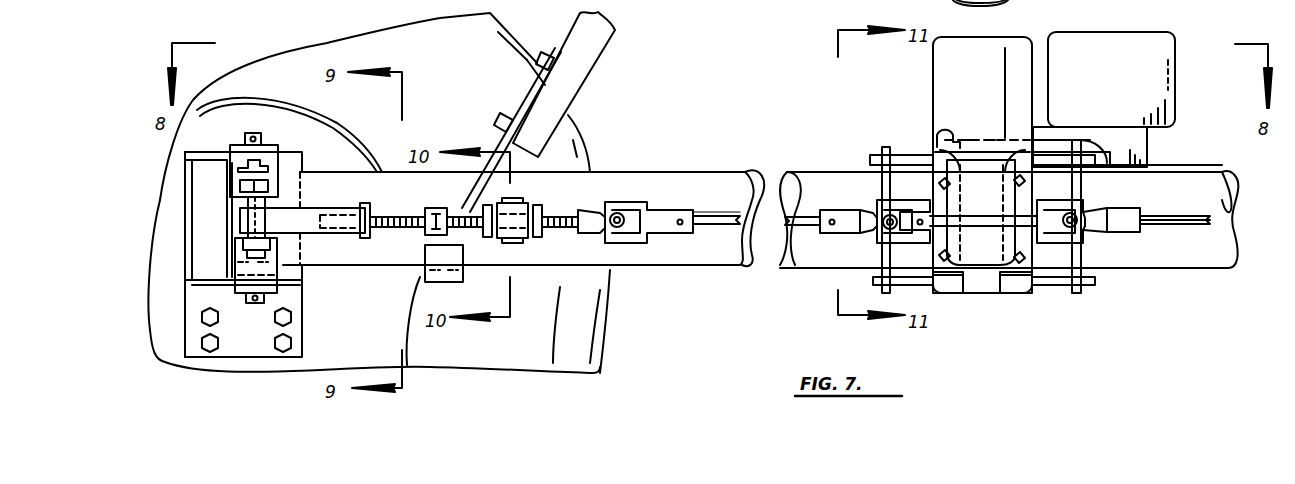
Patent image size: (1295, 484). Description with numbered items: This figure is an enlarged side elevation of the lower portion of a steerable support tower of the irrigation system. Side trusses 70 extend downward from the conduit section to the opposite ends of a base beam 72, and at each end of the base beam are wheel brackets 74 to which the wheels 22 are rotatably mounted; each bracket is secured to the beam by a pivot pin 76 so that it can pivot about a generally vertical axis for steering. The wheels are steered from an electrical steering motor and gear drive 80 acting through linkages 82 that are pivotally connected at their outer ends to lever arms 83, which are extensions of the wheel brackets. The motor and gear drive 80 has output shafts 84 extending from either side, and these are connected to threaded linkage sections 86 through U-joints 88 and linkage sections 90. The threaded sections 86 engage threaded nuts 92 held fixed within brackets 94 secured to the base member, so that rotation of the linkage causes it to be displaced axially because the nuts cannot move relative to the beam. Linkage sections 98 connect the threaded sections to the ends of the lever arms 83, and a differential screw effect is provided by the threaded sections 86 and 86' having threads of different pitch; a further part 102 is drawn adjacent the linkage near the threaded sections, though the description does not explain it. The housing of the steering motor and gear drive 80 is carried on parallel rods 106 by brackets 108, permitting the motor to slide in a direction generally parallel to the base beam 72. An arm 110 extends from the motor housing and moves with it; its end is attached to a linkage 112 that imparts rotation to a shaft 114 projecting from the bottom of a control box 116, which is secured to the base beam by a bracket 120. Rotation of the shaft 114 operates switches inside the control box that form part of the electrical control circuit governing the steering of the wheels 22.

The wheels 22 is at (580, 137).
The side trusses 70 is at (600, 57).
The base beam 72 is at (788, 175).
The wheel brackets 74 is at (190, 152).
The pivot pin 76 is at (255, 133).
The steering motor and gear drive 80 is at (940, 70).
The linkages 82 is at (690, 195).
The lever arms 83 is at (237, 192).
The output shafts 84 is at (1020, 222).
The threaded linkage sections 86 is at (517, 201).
The threaded section 86' is at (397, 204).
The U-joints 88 is at (636, 200).
The linkage sections 90 is at (735, 235).
The threaded nuts 92 is at (520, 243).
The brackets 94 is at (535, 206).
The linkage sections 98 is at (310, 214).
The collar 102 is at (362, 240).
The parallel rods 106 is at (886, 155).
The brackets 108 is at (1013, 293).
The arm 110 is at (940, 122).
The linkage 112 is at (993, 118).
The shaft 114 is at (1100, 170).
The control box 116 is at (1160, 45).
The bracket 120 is at (1150, 148).